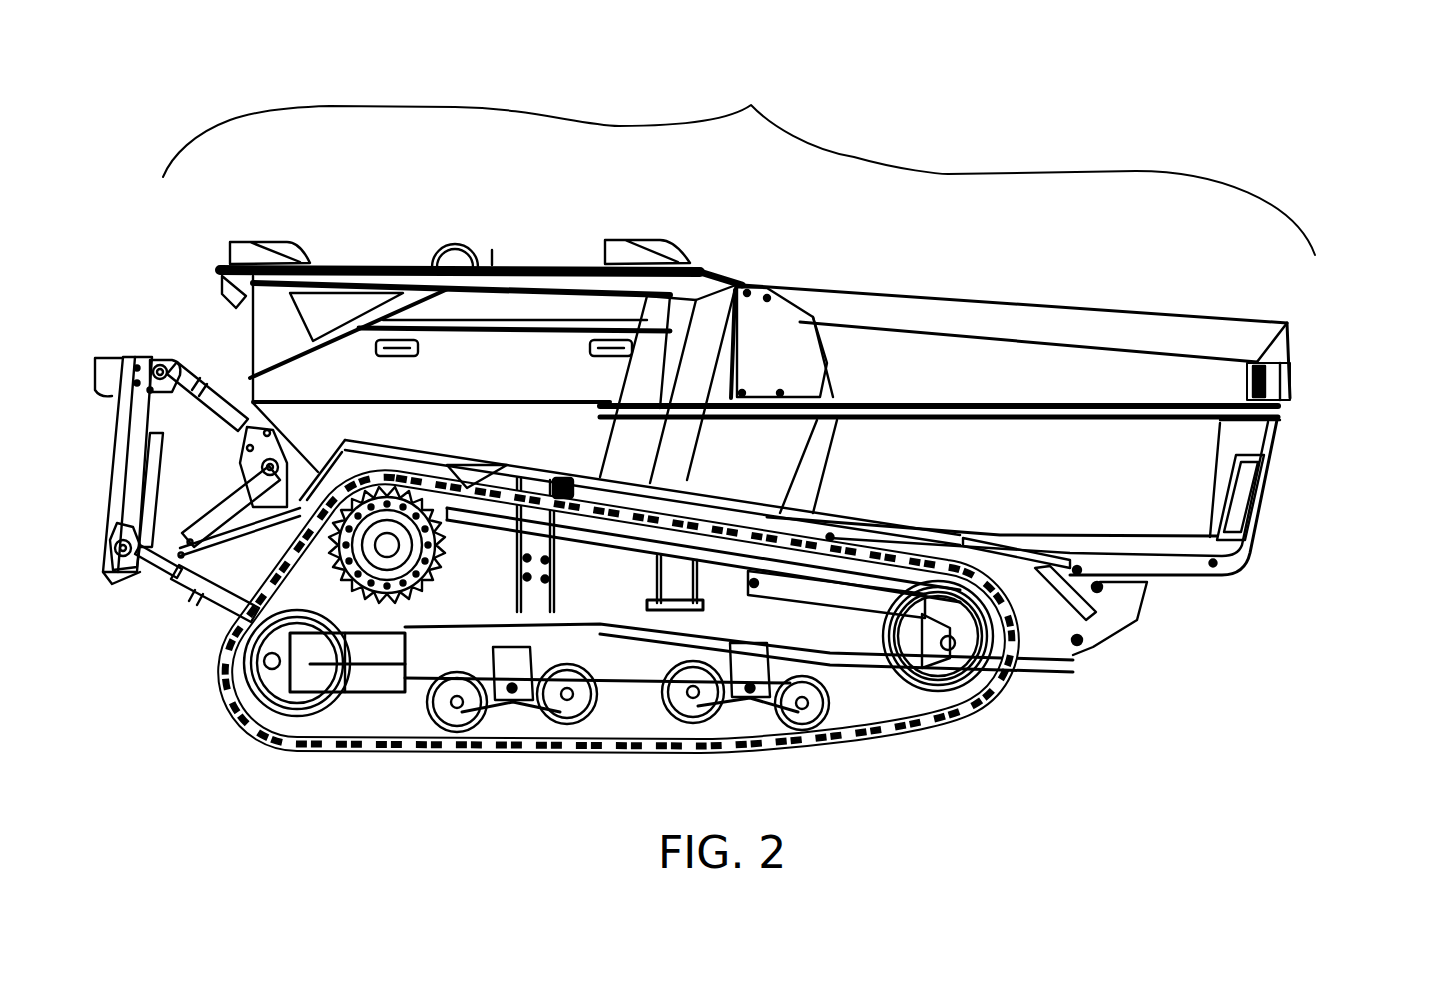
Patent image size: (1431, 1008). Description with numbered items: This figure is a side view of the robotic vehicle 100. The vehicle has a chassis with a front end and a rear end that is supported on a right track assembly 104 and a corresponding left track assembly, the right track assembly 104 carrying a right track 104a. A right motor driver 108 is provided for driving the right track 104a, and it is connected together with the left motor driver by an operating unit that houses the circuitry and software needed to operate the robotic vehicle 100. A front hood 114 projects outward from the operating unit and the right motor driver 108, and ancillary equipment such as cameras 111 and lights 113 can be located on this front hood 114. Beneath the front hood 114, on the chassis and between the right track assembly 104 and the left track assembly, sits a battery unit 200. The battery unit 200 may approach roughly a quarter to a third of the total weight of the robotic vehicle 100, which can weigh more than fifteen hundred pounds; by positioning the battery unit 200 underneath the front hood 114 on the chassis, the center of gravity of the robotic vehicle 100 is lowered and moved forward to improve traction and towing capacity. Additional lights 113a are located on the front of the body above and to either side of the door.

The robotic vehicle 100 is at (739, 156).
The right track assembly 104 is at (227, 708).
The right track 104a is at (427, 662).
The right motor driver 108 is at (272, 337).
The camera 111 is at (1297, 380).
The light 113 is at (1273, 403).
The additional light 113a is at (1240, 513).
The front hood 114 is at (1062, 315).
The battery unit 200 is at (1163, 500).